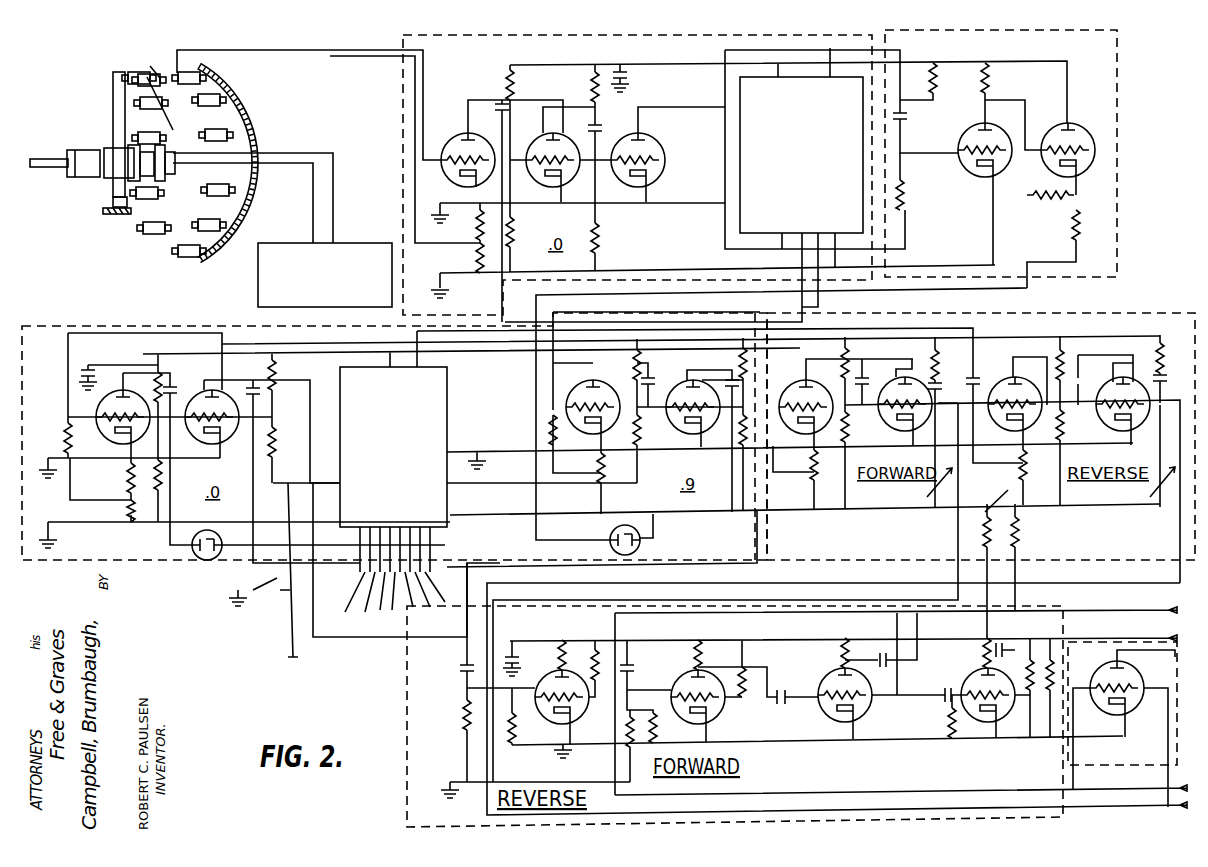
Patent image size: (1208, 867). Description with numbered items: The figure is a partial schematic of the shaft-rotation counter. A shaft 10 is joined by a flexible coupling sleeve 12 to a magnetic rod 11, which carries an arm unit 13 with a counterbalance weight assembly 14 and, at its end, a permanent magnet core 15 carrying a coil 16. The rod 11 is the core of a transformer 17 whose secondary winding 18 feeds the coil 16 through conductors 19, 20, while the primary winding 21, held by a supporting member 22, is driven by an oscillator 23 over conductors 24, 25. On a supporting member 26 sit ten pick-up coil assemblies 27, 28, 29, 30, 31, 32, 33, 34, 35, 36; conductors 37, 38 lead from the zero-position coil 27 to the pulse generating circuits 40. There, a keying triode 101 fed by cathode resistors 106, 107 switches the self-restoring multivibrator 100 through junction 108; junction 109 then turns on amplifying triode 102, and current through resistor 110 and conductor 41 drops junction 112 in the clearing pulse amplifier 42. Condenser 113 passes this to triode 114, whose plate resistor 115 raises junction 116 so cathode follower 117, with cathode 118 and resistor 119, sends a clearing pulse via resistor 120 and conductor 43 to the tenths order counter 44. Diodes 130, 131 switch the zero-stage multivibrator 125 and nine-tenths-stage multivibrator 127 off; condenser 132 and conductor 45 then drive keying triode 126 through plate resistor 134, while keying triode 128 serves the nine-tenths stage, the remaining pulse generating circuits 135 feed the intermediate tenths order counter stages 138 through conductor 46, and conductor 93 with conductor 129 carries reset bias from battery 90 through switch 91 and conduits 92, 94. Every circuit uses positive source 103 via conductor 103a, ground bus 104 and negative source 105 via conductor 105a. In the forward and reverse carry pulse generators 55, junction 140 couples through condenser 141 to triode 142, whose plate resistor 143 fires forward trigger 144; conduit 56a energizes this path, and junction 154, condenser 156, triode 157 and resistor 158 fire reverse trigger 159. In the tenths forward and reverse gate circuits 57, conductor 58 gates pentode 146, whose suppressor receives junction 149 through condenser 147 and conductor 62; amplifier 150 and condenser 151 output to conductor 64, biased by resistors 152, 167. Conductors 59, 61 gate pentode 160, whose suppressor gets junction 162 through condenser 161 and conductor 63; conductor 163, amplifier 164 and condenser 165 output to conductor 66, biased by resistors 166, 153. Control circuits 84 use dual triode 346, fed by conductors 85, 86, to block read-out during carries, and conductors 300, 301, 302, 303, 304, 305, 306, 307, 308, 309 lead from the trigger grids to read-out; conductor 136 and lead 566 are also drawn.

The shaft 10 is at (40, 160).
The rod 11 is at (105, 178).
The flexible coupling sleeve 12 is at (70, 178).
The arm unit 13 is at (113, 116).
The counterbalance weight assembly 14 is at (103, 212).
The permanent magnet core 15 is at (127, 76).
The coil 16 is at (140, 78).
The transformer 17 is at (168, 160).
The secondary winding 18 is at (129, 151).
The conductor 19 is at (158, 61).
The conductor 20 is at (165, 142).
The primary winding 21 is at (170, 177).
The supporting member 22 is at (165, 196).
The oscillator 23 is at (357, 244).
The conductor 24 is at (293, 154).
The conductor 25 is at (310, 190).
The supporting member 26 is at (257, 113).
The pick-up coil assembly 27 is at (206, 71).
The pick-up coil assembly 28 is at (228, 100).
The pick-up coil assembly 29 is at (236, 135).
The pick-up coil assembly 30 is at (236, 188).
The pick-up coil assembly 31 is at (228, 224).
The pick-up coil assembly 32 is at (185, 258).
The pick-up coil assembly 33 is at (153, 235).
The pick-up coil assembly 34 is at (128, 207).
The pick-up coil assembly 35 is at (135, 138).
The pick-up coil assembly 36 is at (135, 100).
The conductor 37 is at (364, 56).
The conductor 38 is at (326, 50).
The pulse generating circuits 40 is at (405, 124).
The conductor 41 is at (900, 50).
The clearing pulse amplifier 42 is at (1117, 82).
The conductor 43 is at (1027, 288).
The tenths order counter 44 is at (36, 324).
The conductor 45 is at (510, 220).
The conductor 46 is at (790, 266).
The forward and reverse carry pulse generators 55 is at (1142, 311).
The conduit 56a is at (775, 358).
The tenths forward and reverse gate circuits 57 is at (405, 676).
The conductor 58 is at (958, 548).
The conductor 59 is at (1185, 520).
The conductor 61 is at (502, 740).
The conductor 62 is at (627, 646).
The conductor 63 is at (466, 652).
The conductor 64 is at (1112, 614).
The conductor 66 is at (1117, 641).
The control circuits 84 is at (1182, 710).
The conductor 85 is at (1073, 778).
The conductor 86 is at (1168, 778).
The battery 90 is at (232, 607).
The switch 91 is at (252, 589).
The conduit 92 is at (274, 613).
The conductor 93 is at (310, 586).
The conduit 94 is at (290, 648).
The multivibrator 100 is at (523, 182).
The keying triode 101 is at (455, 147).
The amplifying triode 102 is at (658, 150).
The positive source 103 is at (628, 84).
The conductor 103a is at (634, 70).
The ground bus 104 is at (448, 212).
The negative source 105 is at (444, 300).
The conductor 105a is at (644, 276).
The cathode resistor 106 is at (478, 250).
The cathode resistor 107 is at (480, 221).
The junction 108 is at (506, 94).
The junction 109 is at (592, 96).
The resistor 110 is at (936, 74).
The junction 112 is at (900, 104).
The condenser 113 is at (902, 122).
The triode 114 is at (963, 180).
The plate resistor 115 is at (990, 72).
The junction 116 is at (986, 104).
The triode 117 is at (1040, 168).
The cathode 118 is at (1079, 180).
The resistor 119 is at (1076, 227).
The resistor 120 is at (1032, 202).
The bistable multivibrator 125 is at (218, 438).
The keying triode 126 is at (72, 434).
The multivibrator 127 is at (696, 434).
The keying triode 128 is at (578, 398).
The conductor 129 is at (285, 478).
The diode 130 is at (192, 552).
The diode 131 is at (638, 540).
The condenser 132 is at (492, 102).
The plate resistor 134 is at (160, 354).
The .1 to .9 pulse generating circuits 135 is at (740, 160).
The lead 136 is at (830, 52).
The .1 to .8 tenths order counter stages 138 is at (447, 392).
The junction 140 is at (637, 365).
The condenser 141 is at (818, 358).
The triode 142 is at (818, 434).
The plate resistor 143 is at (845, 358).
The forward self-restoring trigger 144 is at (885, 432).
The pentode gate 146 is at (718, 704).
The condenser 147 is at (639, 676).
The junction 149 is at (274, 376).
The triode amplifier 150 is at (868, 720).
The condenser 151 is at (895, 700).
The resistor 152 is at (1010, 505).
The resistor 153 is at (1057, 643).
The junction 154 is at (220, 376).
The condenser 156 is at (1008, 354).
The triode 157 is at (1058, 359).
The resistor 158 is at (1054, 350).
The self-restoring trigger circuit 159 is at (1108, 426).
The pentode gate 160 is at (575, 713).
The condenser 161 is at (462, 676).
The junction 162 is at (743, 368).
The conductor 163 is at (800, 645).
The triode amplifier 164 is at (970, 657).
The condenser 165 is at (998, 646).
The resistor 166 is at (1018, 533).
The resistor 167 is at (1043, 737).
The conductor 300 is at (357, 562).
The conductor 301 is at (338, 608).
The conductor 302 is at (339, 626).
The conductor 303 is at (381, 606).
The conductor 304 is at (385, 626).
The conductor 305 is at (449, 606).
The conductor 306 is at (449, 588).
The conductor 307 is at (440, 554).
The conductor 308 is at (448, 528).
The conductor 309 is at (455, 570).
The dual triode 346 is at (1127, 729).
The lead 566 is at (217, 345).